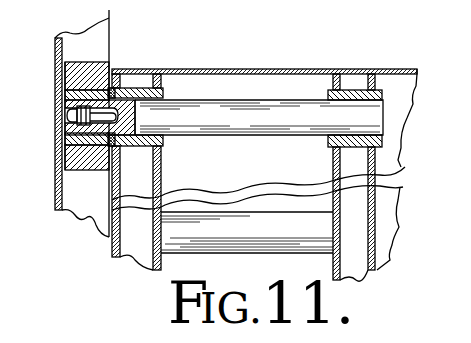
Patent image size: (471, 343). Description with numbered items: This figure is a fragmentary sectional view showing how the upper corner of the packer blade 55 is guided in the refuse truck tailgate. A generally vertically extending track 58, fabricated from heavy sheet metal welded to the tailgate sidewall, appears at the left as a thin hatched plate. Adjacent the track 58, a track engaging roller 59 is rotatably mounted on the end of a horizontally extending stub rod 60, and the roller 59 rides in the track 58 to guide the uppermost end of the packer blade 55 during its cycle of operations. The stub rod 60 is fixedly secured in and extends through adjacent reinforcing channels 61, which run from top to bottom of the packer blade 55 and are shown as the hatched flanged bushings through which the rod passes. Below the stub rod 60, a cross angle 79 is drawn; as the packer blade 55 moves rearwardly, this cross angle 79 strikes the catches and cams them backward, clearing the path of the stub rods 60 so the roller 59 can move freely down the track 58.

The packer blade 55 is at (293, 64).
The vertically extending tracks 58 is at (62, 50).
The track engaging roller 59 is at (82, 170).
The stub rod 60 is at (193, 100).
The reinforcing channels 61 is at (112, 185).
The cross angles 79 is at (262, 212).